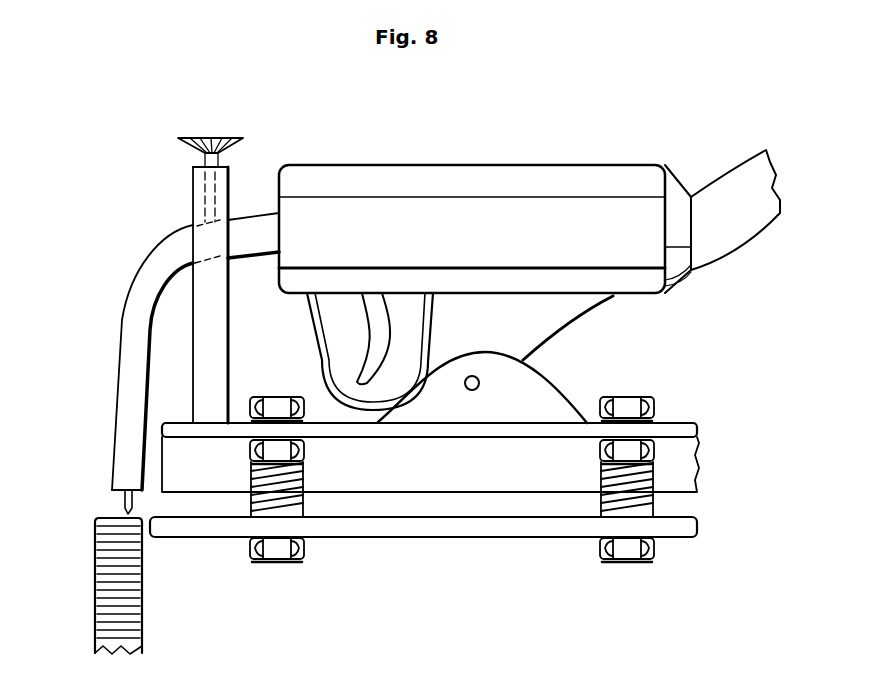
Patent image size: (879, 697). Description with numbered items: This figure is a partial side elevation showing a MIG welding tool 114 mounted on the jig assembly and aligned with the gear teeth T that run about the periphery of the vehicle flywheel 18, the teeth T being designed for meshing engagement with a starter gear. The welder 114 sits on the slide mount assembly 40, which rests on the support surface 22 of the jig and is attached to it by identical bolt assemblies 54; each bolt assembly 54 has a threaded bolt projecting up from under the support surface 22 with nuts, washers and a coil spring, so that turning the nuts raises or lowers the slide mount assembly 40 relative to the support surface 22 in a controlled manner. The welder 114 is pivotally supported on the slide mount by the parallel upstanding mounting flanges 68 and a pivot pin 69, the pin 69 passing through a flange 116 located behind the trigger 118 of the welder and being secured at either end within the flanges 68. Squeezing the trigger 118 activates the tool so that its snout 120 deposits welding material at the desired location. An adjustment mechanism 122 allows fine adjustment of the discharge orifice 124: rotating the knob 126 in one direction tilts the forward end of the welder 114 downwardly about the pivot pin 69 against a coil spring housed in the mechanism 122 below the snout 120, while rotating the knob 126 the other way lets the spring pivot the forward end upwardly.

The MIG welding tool 114 is at (656, 147).
The flange 116 is at (548, 312).
The trigger 118 is at (305, 367).
The snout 120 is at (121, 322).
The adjustment mechanism 122 is at (230, 208).
The discharge orifice 124 is at (124, 503).
The knob 126 is at (188, 145).
The mounting flanges 68 is at (566, 405).
The pivot pin 69 is at (480, 382).
The slide mount assembly 40 is at (680, 418).
The support surface 22 is at (410, 538).
The bolt assemblies 54 is at (303, 479).
The flywheel 18 is at (156, 586).
The gear teeth T is at (143, 570).